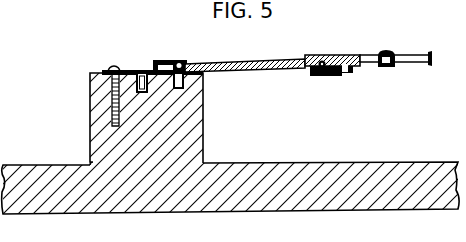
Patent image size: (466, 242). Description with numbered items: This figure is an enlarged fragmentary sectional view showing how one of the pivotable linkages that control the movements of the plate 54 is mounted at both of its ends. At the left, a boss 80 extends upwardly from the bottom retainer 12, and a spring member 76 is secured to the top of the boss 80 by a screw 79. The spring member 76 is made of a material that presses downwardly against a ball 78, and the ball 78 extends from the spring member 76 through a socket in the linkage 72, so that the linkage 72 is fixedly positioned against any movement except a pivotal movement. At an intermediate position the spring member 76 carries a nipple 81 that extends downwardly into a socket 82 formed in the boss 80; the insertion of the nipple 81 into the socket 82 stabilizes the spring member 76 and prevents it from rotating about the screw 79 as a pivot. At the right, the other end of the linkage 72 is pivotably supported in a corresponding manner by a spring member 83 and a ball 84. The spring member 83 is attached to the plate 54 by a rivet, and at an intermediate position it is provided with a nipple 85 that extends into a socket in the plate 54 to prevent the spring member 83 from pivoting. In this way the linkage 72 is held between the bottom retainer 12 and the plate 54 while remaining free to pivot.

The bottom retainer 12 is at (285, 163).
The boss 80 is at (203, 95).
The screw 79 is at (113, 67).
The spring member 76 is at (127, 71).
The nipple 81 is at (141, 71).
The socket 82 is at (150, 88).
The ball 78 is at (183, 61).
The linkage 72 is at (246, 65).
The ball 84 is at (323, 61).
The nipple 85 is at (360, 64).
The spring member 83 is at (343, 74).
The plate 54 is at (417, 52).